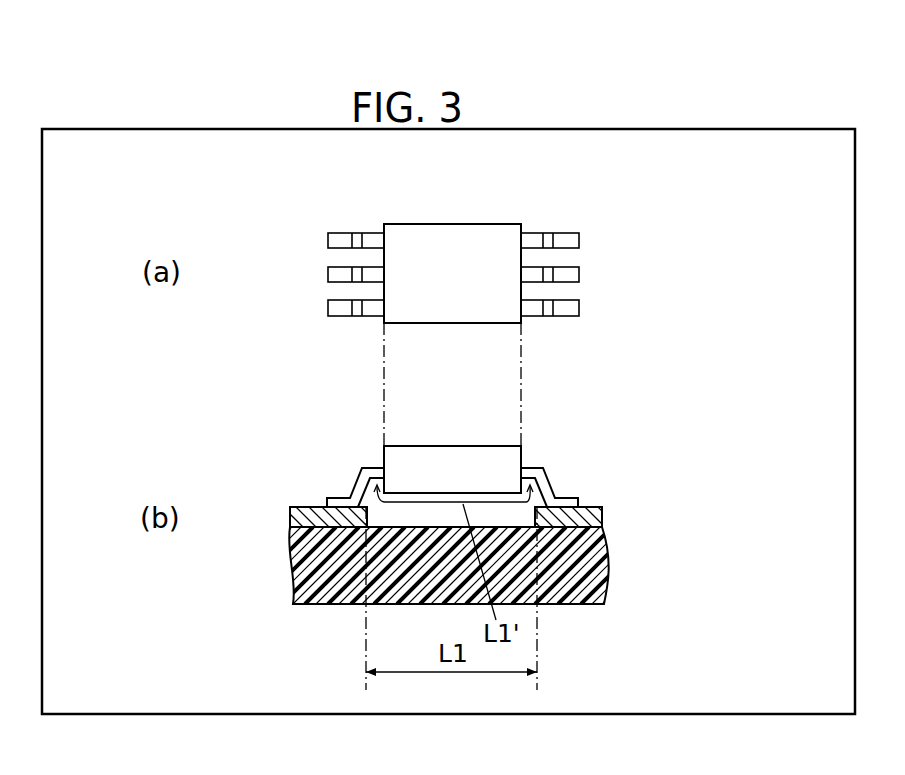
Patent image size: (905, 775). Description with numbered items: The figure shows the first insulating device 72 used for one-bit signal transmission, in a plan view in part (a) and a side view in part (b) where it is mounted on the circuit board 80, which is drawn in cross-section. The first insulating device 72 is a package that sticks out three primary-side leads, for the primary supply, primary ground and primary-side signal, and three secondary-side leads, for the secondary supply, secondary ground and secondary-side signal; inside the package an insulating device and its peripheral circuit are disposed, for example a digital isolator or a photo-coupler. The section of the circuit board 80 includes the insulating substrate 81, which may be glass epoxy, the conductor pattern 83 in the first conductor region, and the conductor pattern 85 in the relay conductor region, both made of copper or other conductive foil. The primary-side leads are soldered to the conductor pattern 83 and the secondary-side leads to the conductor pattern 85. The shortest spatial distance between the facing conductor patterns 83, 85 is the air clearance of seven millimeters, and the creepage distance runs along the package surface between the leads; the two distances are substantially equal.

The first insulating device 72 is at (596, 209).
The circuit board 80 is at (467, 555).
The insulating substrate 81 is at (592, 590).
The conductor pattern 83 is at (293, 517).
The conductor pattern 85 is at (591, 518).